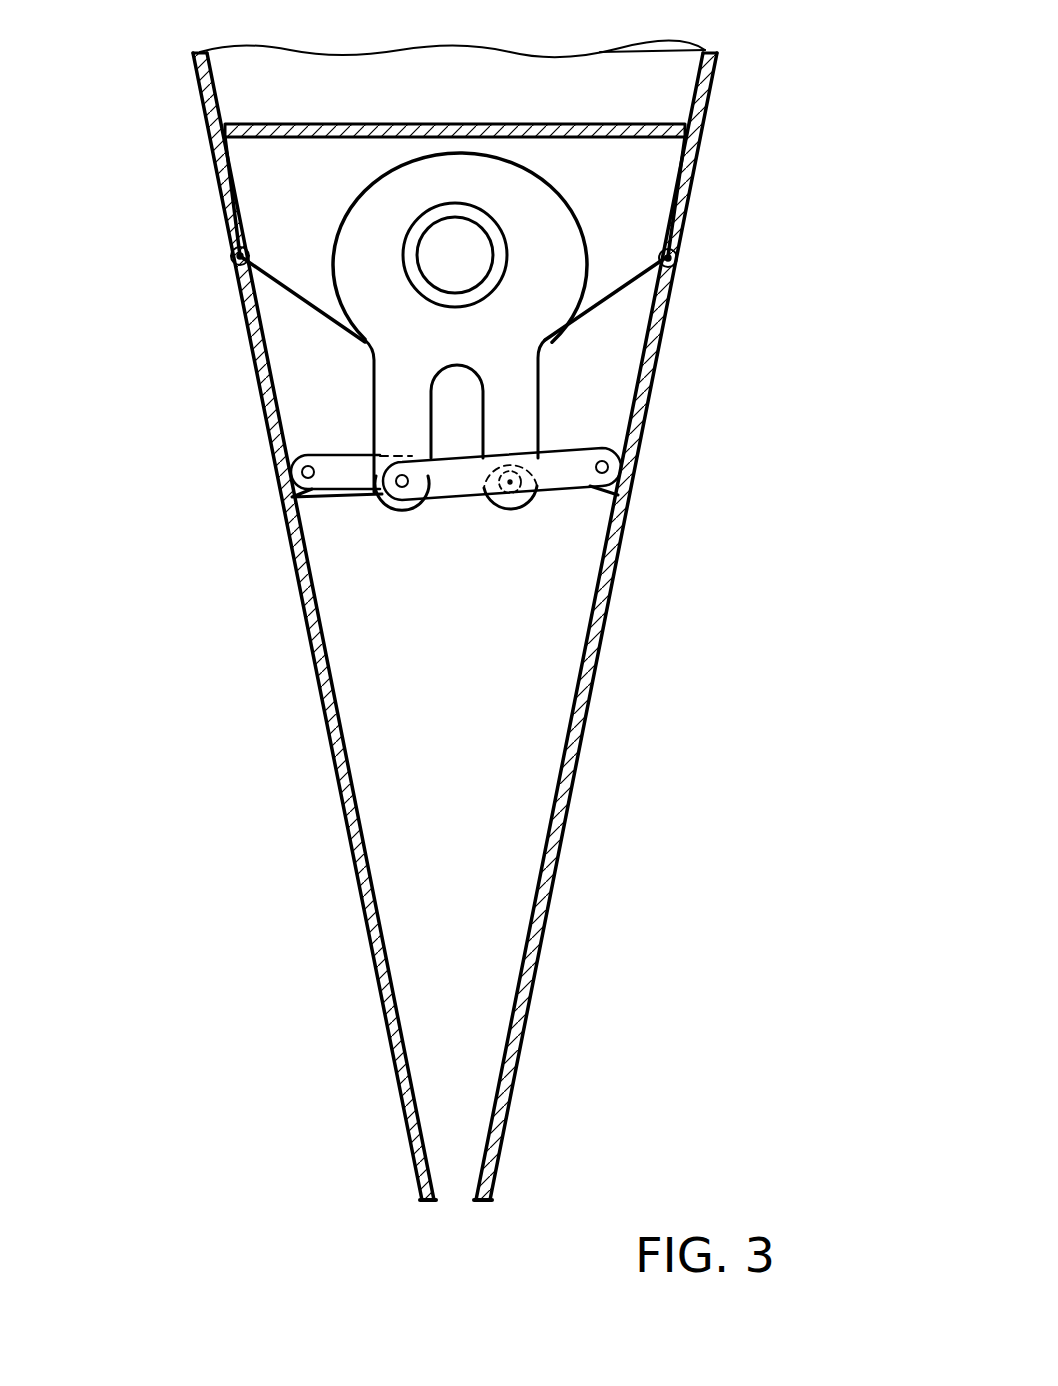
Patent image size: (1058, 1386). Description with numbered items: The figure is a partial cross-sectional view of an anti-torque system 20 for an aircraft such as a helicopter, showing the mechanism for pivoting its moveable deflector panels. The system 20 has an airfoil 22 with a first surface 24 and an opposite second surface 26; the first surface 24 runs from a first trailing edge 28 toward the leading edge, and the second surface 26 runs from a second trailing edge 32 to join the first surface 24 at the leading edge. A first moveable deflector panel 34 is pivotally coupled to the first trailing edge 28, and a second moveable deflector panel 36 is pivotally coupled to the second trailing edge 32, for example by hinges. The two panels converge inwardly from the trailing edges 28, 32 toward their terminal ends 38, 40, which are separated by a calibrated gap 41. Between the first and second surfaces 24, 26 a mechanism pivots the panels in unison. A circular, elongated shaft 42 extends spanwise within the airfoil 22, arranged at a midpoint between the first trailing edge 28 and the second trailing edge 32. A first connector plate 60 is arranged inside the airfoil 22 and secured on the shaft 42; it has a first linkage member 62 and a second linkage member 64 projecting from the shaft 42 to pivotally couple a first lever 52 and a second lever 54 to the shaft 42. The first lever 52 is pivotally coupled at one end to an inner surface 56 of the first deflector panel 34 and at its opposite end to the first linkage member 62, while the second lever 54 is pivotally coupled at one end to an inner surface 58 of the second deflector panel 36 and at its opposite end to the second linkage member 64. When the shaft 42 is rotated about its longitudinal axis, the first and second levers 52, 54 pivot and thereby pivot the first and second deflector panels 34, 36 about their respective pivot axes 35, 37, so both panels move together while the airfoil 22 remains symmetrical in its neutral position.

The anti-torque system 20 is at (176, 42).
The airfoil 22 is at (735, 50).
The first surface 24 is at (280, 642).
The second surface 26 is at (634, 642).
The first trailing edge 28 is at (236, 248).
The second trailing edge 32 is at (676, 250).
The first moveable deflector panel 34 is at (332, 782).
The pivot axis 35 is at (228, 258).
The second moveable deflector panel 36 is at (578, 790).
The pivot axis 37 is at (680, 260).
The terminal end 38 is at (425, 1200).
The terminal end 40 is at (484, 1200).
The calibrated gap 41 is at (455, 1200).
The shaft 42 is at (497, 224).
The first lever 52 is at (346, 465).
The second lever 54 is at (565, 463).
The inner surface 56 is at (340, 728).
The inner surface 58 is at (570, 723).
The first connector plate 60 is at (362, 205).
The first linkage member 62 is at (535, 505).
The second linkage member 64 is at (398, 503).